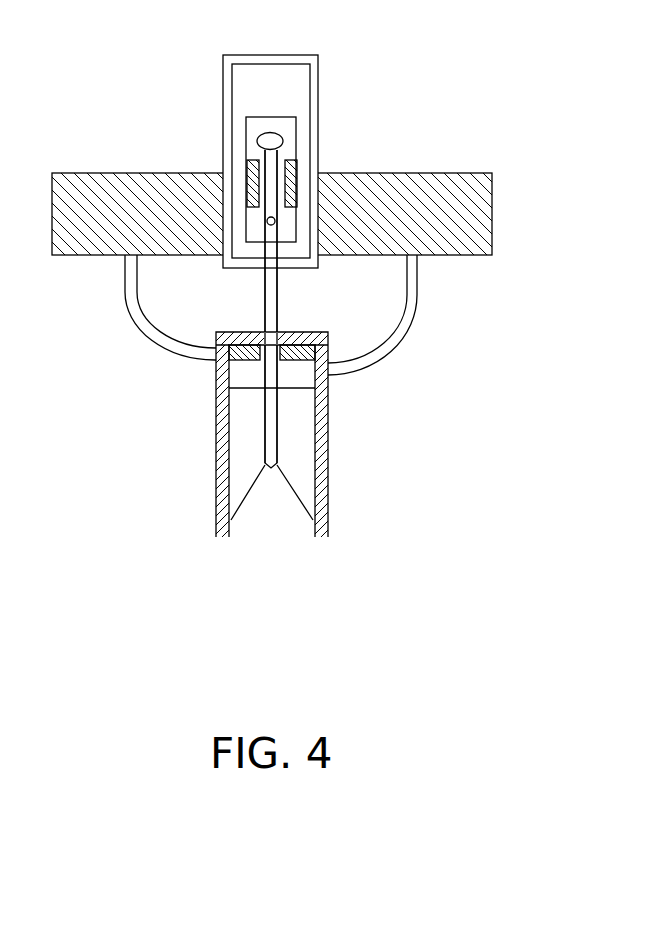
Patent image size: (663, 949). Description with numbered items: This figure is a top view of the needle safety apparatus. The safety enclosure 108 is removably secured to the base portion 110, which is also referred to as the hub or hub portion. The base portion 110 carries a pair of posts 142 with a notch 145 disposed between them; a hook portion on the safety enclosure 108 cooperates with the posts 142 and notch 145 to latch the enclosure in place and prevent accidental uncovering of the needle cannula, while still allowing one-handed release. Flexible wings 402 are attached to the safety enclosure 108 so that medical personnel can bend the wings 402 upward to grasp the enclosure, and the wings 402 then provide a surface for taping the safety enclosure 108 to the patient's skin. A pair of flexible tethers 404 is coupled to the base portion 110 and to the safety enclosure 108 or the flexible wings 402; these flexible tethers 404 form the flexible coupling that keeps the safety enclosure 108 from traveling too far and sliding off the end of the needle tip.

The safety enclosure 108 is at (393, 82).
The flexible wings 402 is at (492, 212).
The flexible tethers 404 is at (133, 315).
The base portion 110 is at (195, 378).
The notch 145 is at (278, 333).
The posts 142 is at (242, 362).